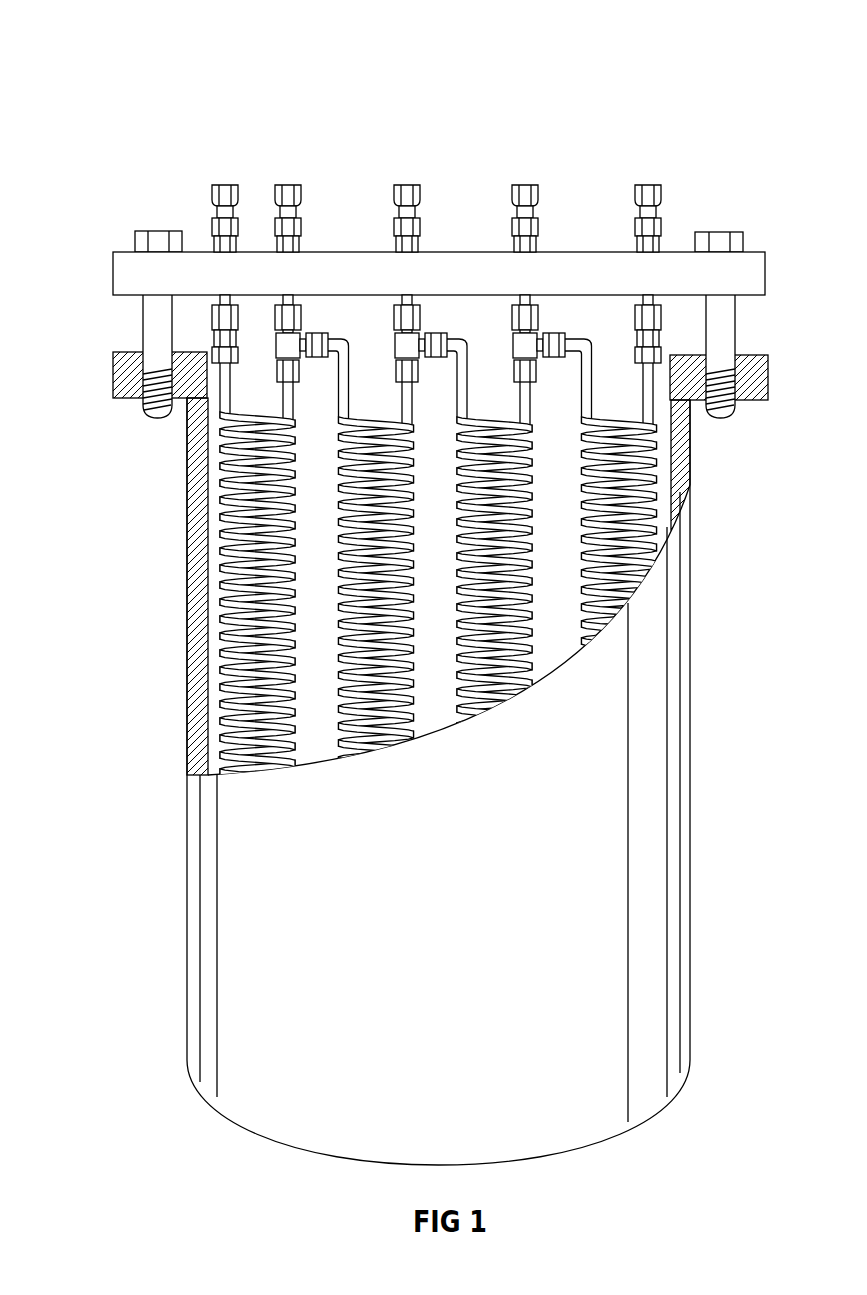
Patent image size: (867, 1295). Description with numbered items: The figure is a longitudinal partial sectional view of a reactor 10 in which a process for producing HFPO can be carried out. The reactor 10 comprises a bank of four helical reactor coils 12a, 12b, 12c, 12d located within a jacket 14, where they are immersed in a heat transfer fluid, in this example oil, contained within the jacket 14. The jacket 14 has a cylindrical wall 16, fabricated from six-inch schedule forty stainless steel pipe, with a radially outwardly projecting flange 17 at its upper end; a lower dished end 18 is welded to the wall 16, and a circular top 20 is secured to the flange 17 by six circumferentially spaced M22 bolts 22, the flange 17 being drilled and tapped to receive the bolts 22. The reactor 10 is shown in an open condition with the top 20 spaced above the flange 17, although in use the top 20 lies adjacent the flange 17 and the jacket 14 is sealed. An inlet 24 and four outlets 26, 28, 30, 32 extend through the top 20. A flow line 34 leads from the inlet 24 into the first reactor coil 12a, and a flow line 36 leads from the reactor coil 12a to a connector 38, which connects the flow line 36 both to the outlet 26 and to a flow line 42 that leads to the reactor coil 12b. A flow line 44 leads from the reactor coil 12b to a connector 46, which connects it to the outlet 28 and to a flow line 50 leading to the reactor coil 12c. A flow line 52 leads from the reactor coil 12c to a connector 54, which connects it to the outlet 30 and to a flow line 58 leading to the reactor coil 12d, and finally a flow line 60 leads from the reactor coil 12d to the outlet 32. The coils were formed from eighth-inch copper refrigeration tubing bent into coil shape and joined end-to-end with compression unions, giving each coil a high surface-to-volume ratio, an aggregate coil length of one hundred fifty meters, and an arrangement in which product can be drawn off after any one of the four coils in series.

The reactor 10 is at (694, 106).
The reactor coil 12a is at (235, 655).
The reactor coil 12b is at (375, 750).
The reactor coil 12c is at (500, 668).
The reactor coil 12d is at (652, 497).
The jacket 14 is at (235, 965).
The cylindrical wall 16 is at (190, 540).
The flange 17 is at (128, 372).
The lower dished end 18 is at (565, 1152).
The circular top 20 is at (125, 275).
The bolts 22 is at (155, 325).
The inlet 24 is at (224, 185).
The outlet 26 is at (288, 185).
The outlet 28 is at (407, 185).
The outlet 30 is at (525, 185).
The outlet 32 is at (648, 185).
The flow line 34 is at (213, 397).
The flow line 36 is at (290, 400).
The connector 38 is at (285, 343).
The flow line 42 is at (345, 373).
The flow line 44 is at (410, 400).
The connector 46 is at (400, 343).
The flow line 50 is at (462, 372).
The flow line 52 is at (527, 400).
The connector 54 is at (515, 343).
The flow line 58 is at (588, 382).
The flow line 60 is at (650, 400).